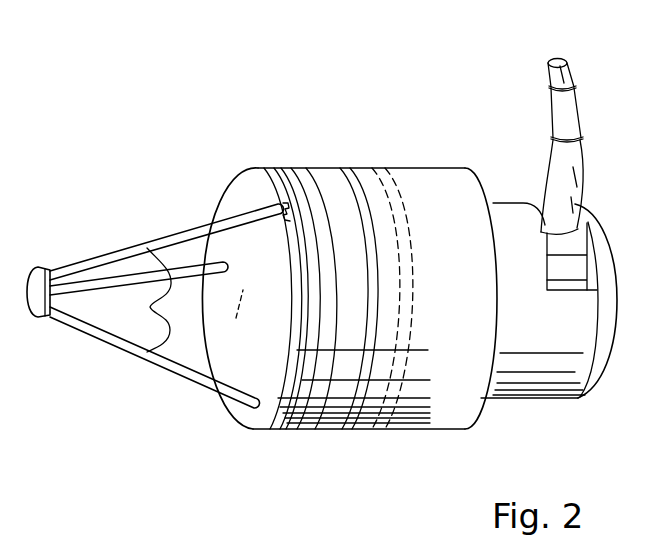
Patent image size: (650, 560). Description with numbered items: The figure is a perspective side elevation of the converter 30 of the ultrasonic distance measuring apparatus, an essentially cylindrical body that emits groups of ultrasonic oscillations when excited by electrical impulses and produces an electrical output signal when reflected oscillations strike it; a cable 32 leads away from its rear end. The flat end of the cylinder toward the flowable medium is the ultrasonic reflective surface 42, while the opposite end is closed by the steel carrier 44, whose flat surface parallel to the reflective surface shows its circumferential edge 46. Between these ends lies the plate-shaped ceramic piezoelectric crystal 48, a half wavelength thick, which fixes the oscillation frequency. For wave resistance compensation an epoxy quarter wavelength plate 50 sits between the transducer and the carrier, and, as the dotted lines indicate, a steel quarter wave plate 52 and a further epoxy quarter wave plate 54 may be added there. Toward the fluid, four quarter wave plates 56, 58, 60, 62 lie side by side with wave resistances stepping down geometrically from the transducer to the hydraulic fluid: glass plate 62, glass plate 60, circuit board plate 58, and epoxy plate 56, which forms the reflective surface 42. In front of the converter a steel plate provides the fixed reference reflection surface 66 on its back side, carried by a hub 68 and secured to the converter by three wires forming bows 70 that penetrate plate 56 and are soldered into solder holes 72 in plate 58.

The converter 30 is at (238, 97).
The cable 32 is at (557, 76).
The ultrasonic reflective surface 42 is at (233, 355).
The carrier 44 is at (438, 200).
The circumferential edge 46 is at (364, 200).
The piezoelectric crystal 48 is at (339, 193).
The quarter wavelength plate 50 is at (352, 396).
The quarter wave plate 52 is at (366, 428).
The quarter wave plate 54 is at (398, 396).
The plate 56 is at (270, 189).
The plate 58 is at (287, 188).
The plate 60 is at (294, 191).
The plate 62 is at (312, 186).
The reference reflection surface 66 is at (50, 297).
The hub 68 is at (42, 264).
The bows 70 is at (149, 300).
The solder holes 72 is at (283, 217).